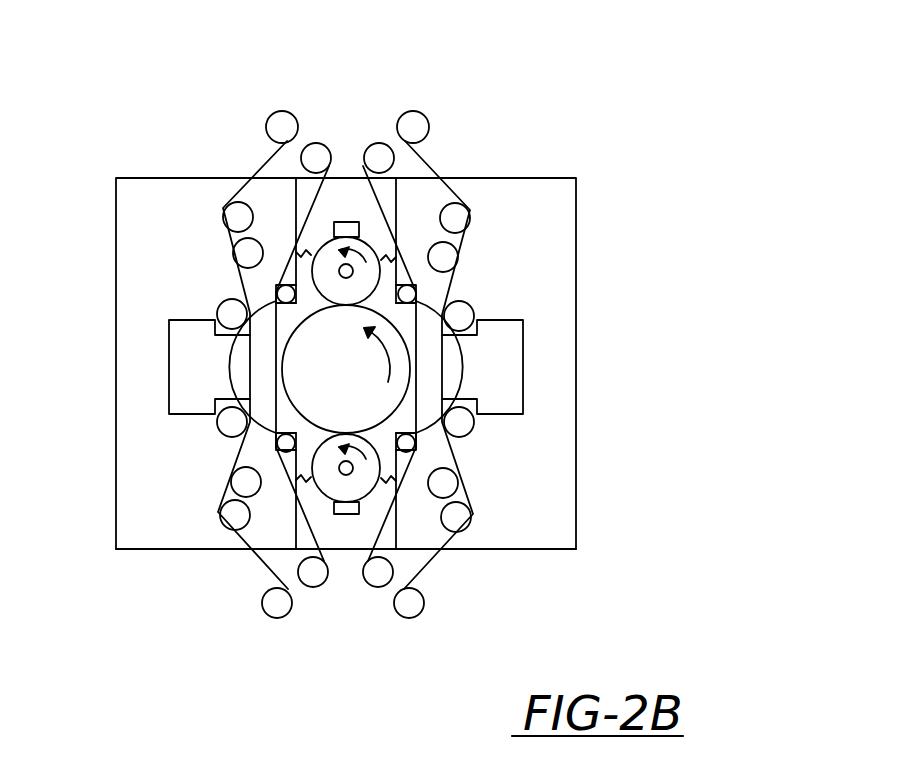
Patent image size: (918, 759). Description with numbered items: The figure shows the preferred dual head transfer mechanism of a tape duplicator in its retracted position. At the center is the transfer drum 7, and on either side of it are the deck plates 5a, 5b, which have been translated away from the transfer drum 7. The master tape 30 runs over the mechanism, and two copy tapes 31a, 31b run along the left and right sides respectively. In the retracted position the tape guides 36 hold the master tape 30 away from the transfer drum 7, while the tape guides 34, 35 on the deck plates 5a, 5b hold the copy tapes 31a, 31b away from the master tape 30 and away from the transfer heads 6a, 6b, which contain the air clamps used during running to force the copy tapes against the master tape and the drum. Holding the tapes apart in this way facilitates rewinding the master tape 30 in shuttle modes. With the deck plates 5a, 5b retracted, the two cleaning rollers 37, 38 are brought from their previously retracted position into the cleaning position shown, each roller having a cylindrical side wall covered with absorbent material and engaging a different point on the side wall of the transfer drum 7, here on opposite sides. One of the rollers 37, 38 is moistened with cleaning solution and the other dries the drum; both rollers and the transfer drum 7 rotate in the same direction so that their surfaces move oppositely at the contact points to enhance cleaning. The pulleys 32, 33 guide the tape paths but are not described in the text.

The deck plate 5a is at (208, 550).
The deck plate 5b is at (478, 550).
The transfer head 6a is at (169, 368).
The transfer head 6b is at (523, 367).
The transfer drum 7 is at (346, 369).
The master tape 30 is at (300, 192).
The copy tape 31a is at (265, 158).
The copy tape 31b is at (428, 172).
The belt pulley 32 is at (268, 118).
The belt pulley 33 is at (322, 143).
The tape guide 34 is at (223, 216).
The tape guide 35 is at (233, 257).
The tape guide 36 is at (277, 293).
The cleaning roller 37 is at (350, 221).
The cleaning roller 38 is at (346, 514).